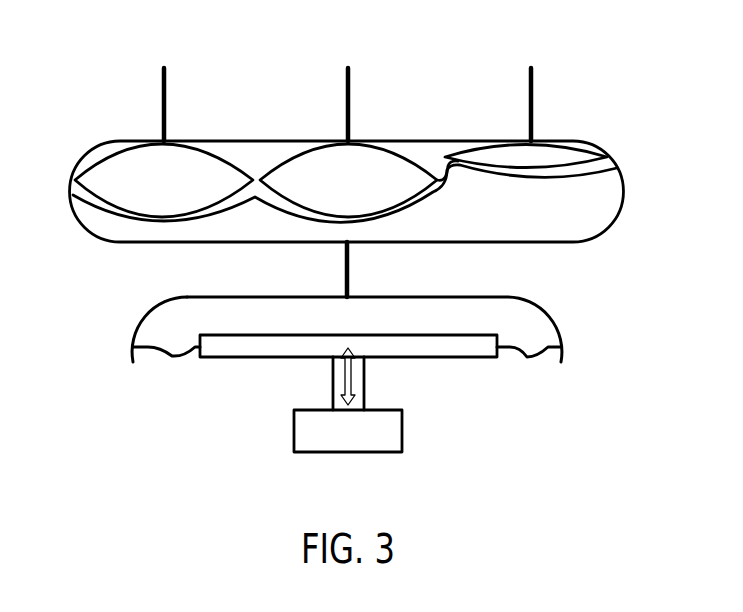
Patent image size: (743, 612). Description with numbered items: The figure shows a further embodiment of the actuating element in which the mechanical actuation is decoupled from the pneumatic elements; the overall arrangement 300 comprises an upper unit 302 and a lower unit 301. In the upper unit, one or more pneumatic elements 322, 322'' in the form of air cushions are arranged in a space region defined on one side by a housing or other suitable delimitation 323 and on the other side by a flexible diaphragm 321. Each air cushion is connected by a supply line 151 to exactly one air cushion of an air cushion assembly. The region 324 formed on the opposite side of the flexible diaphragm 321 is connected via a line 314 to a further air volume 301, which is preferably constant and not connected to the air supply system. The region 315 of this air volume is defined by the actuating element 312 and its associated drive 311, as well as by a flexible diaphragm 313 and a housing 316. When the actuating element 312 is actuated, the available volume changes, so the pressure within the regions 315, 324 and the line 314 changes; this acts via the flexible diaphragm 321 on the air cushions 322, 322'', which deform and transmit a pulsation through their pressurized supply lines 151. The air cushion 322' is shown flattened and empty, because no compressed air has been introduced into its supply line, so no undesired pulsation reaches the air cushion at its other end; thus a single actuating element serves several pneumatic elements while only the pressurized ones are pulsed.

The supply lines 151 is at (351, 84).
The optical device 300 is at (103, 344).
The further air volume 301 is at (572, 337).
The upper unit 302 is at (623, 225).
The drive 311 is at (403, 433).
The actuating element 312 is at (247, 357).
The flexible diaphragm 313 is at (174, 358).
The line 314 is at (352, 273).
The region 315 is at (178, 310).
The housing 316 is at (510, 297).
The flexible diaphragm 321 is at (626, 181).
The pneumatic element 322 is at (348, 151).
The air cushion 322' is at (557, 140).
The pneumatic element 322'' is at (164, 151).
The housing or other suitable delimitation 323 is at (450, 141).
The region 324 is at (95, 227).